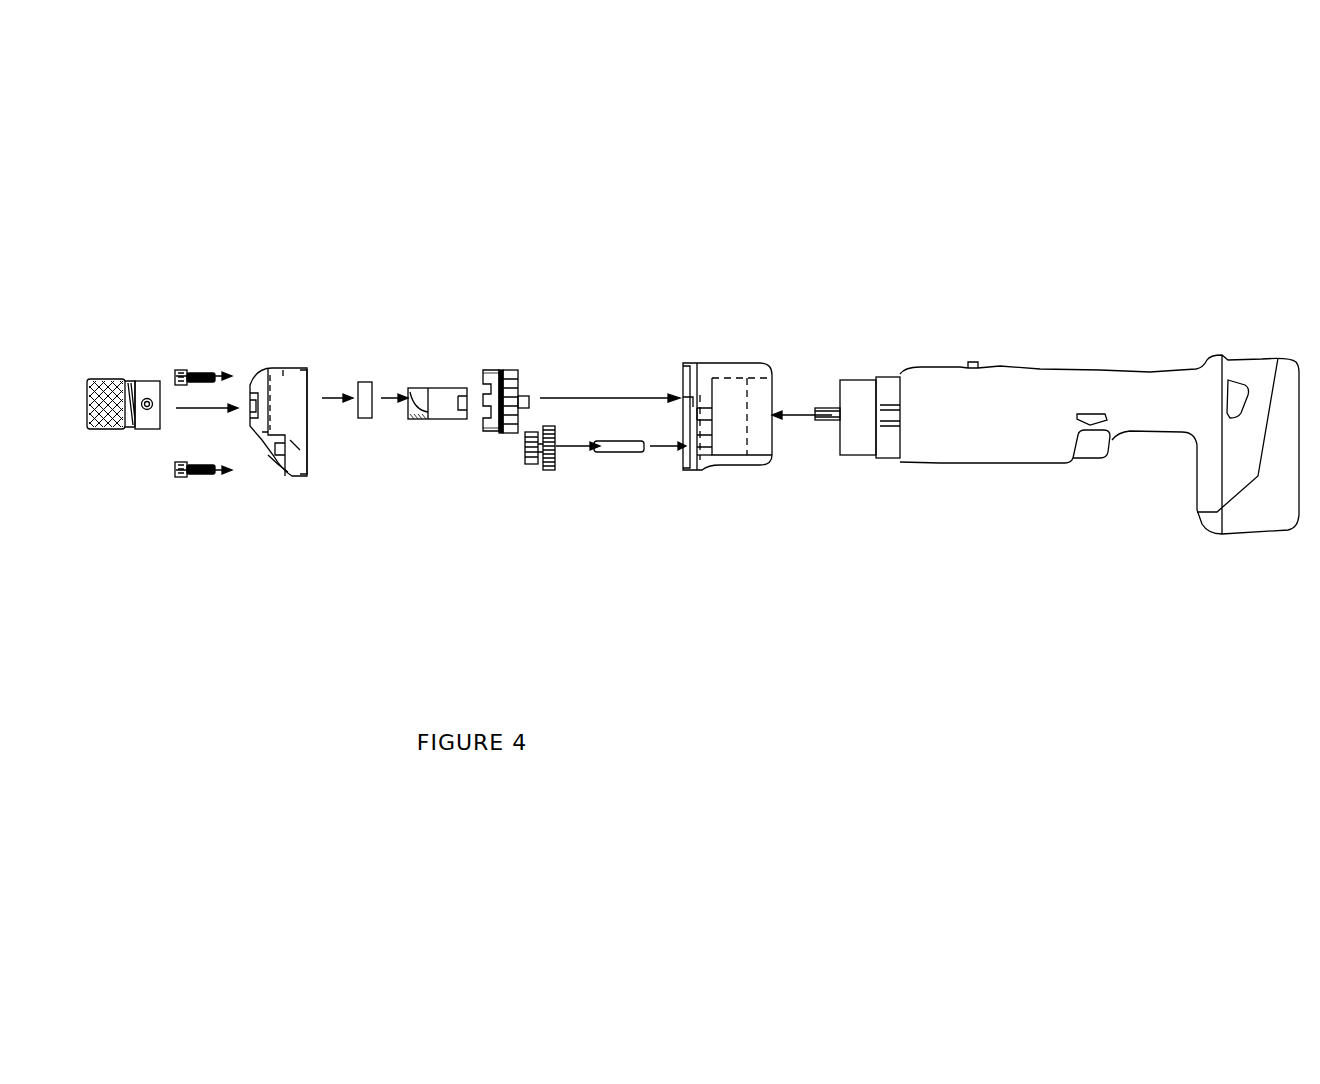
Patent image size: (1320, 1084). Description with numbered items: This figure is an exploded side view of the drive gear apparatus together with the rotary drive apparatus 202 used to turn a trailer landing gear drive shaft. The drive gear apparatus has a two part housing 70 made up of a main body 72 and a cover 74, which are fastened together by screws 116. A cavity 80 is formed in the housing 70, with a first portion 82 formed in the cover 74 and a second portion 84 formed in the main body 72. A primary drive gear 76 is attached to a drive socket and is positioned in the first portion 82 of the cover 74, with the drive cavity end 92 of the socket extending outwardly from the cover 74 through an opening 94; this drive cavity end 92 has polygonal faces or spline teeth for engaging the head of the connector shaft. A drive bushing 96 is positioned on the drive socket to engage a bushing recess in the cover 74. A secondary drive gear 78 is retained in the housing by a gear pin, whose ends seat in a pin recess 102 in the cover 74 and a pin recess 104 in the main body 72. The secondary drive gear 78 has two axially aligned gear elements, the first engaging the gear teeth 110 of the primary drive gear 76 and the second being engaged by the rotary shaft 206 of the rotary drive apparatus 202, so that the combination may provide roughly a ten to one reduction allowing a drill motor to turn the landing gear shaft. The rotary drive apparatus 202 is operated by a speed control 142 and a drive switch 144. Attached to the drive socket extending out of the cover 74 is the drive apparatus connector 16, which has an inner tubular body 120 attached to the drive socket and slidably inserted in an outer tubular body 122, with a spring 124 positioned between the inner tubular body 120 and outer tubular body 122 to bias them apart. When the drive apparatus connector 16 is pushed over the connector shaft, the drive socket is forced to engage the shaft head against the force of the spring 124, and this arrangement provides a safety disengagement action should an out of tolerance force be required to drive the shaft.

The drive apparatus connector 16 is at (118, 345).
The housing 70 is at (278, 522).
The main body 72 is at (765, 365).
The cover 74 is at (285, 368).
The primary drive gear 76 is at (494, 433).
The secondary drive gear 78 is at (530, 464).
The cavity 80 is at (312, 360).
The first portion 82 is at (300, 445).
The second portion 84 is at (690, 420).
The drive cavity end 92 is at (417, 418).
The opening 94 is at (252, 410).
The drive bushing 96 is at (370, 382).
The pin recess 102 is at (288, 455).
The pin recess 104 is at (705, 458).
The gear teeth 110 is at (508, 372).
The screws 116 is at (192, 377).
The inner tubular body 120 is at (150, 432).
The outer tubular body 122 is at (106, 432).
The spring 124 is at (134, 432).
The speed control 142 is at (977, 362).
The drive switch 144 is at (1091, 460).
The rotary drive apparatus 202 is at (860, 456).
The rotary shaft 206 is at (823, 410).